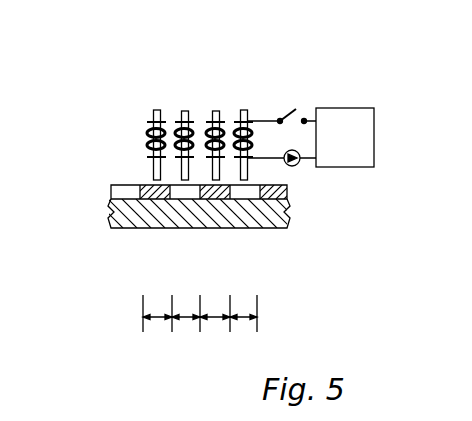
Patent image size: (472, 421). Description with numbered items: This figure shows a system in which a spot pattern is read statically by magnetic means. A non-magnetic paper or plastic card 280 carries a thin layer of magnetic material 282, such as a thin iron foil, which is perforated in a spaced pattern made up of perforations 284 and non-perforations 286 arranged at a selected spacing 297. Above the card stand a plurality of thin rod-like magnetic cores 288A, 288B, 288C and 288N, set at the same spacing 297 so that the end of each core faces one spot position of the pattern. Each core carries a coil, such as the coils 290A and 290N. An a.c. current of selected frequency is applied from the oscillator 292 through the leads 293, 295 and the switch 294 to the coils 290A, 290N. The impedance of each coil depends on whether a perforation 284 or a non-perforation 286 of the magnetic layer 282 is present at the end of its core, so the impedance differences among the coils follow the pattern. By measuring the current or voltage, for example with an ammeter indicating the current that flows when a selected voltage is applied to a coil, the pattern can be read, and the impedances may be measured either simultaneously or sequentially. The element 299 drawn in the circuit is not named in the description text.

The non-magnetic paper or plastic card 280 is at (267, 228).
The thin layer of magnetic material 282 is at (282, 193).
The perforations 284 is at (127, 192).
The non-perforations 286 is at (155, 200).
The rod-like magnetic core 288N is at (152, 112).
The rod-like magnetic core 288C is at (181, 115).
The rod-like magnetic core 288B is at (213, 112).
The rod-like magnetic core 288A is at (248, 126).
The coil 290N is at (147, 133).
The coil 290A is at (262, 124).
The oscillator 292 is at (374, 143).
The lead 293 is at (306, 121).
The switch 294 is at (294, 109).
The lead 295 is at (273, 160).
The spacing 297 is at (243, 326).
The current source 299 is at (296, 166).